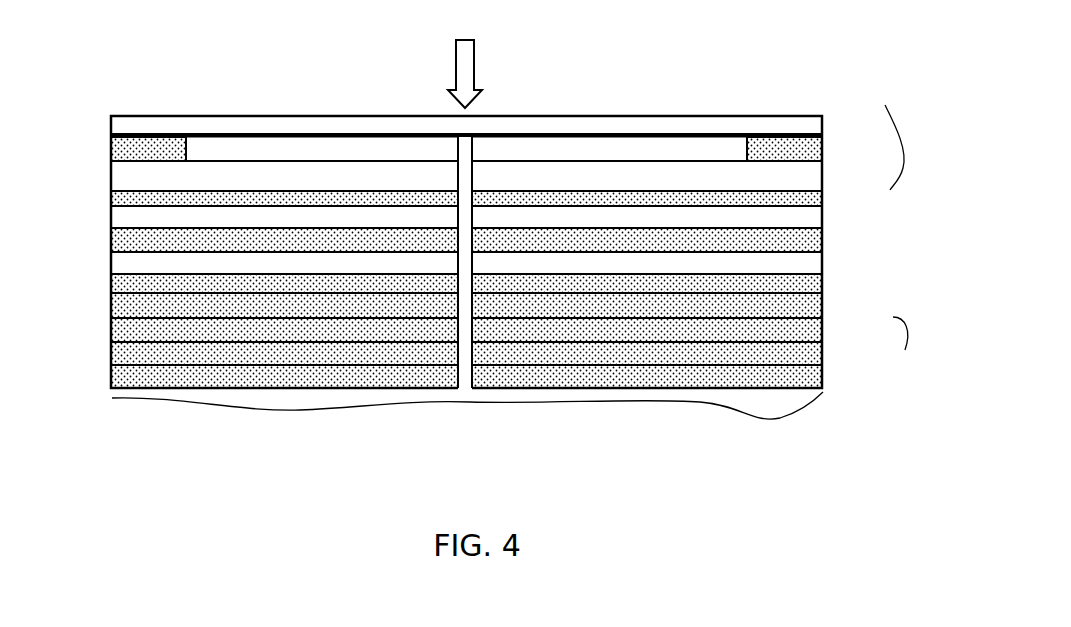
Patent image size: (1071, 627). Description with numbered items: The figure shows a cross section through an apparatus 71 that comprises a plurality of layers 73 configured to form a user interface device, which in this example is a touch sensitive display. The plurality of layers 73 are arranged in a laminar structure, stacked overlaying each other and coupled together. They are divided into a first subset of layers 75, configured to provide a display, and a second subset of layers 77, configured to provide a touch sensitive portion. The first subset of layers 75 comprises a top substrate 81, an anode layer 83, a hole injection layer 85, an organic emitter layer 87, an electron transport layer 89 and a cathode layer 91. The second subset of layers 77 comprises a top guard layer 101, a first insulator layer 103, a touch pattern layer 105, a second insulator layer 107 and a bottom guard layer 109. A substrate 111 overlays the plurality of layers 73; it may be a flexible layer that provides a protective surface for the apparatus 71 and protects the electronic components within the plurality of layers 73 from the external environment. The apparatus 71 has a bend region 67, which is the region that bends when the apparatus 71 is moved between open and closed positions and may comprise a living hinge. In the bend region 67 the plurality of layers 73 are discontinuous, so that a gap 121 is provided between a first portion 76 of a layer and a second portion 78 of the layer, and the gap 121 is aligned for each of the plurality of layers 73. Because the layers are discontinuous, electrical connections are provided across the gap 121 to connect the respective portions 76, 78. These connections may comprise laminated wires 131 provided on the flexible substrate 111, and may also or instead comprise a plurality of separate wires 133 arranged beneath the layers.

The bend region 67 is at (465, 58).
The substrate 111 is at (111, 115).
The laminated wires 131 is at (450, 127).
The top guard layer 101 is at (111, 130).
The first insulator layer 103 is at (111, 157).
The touch pattern layer 105 is at (111, 186).
The second insulator layer 107 is at (111, 212).
The bottom guard layer 109 is at (111, 240).
The top substrate 81 is at (111, 265).
The anode layer 83 is at (111, 288).
The hole injection layer 85 is at (111, 302).
The organic emitter layer 87 is at (111, 327).
The electron transport layer 89 is at (111, 352).
The cathode layer 91 is at (111, 376).
The gap 121 is at (467, 370).
The separate wires 133 is at (114, 400).
The first portion 76 is at (112, 429).
The second portion 78 is at (475, 429).
The second subset of layers 77 is at (828, 132).
The plurality of layers 73 is at (847, 248).
The first subset of layers 75 is at (828, 250).
The apparatus 71 is at (828, 392).